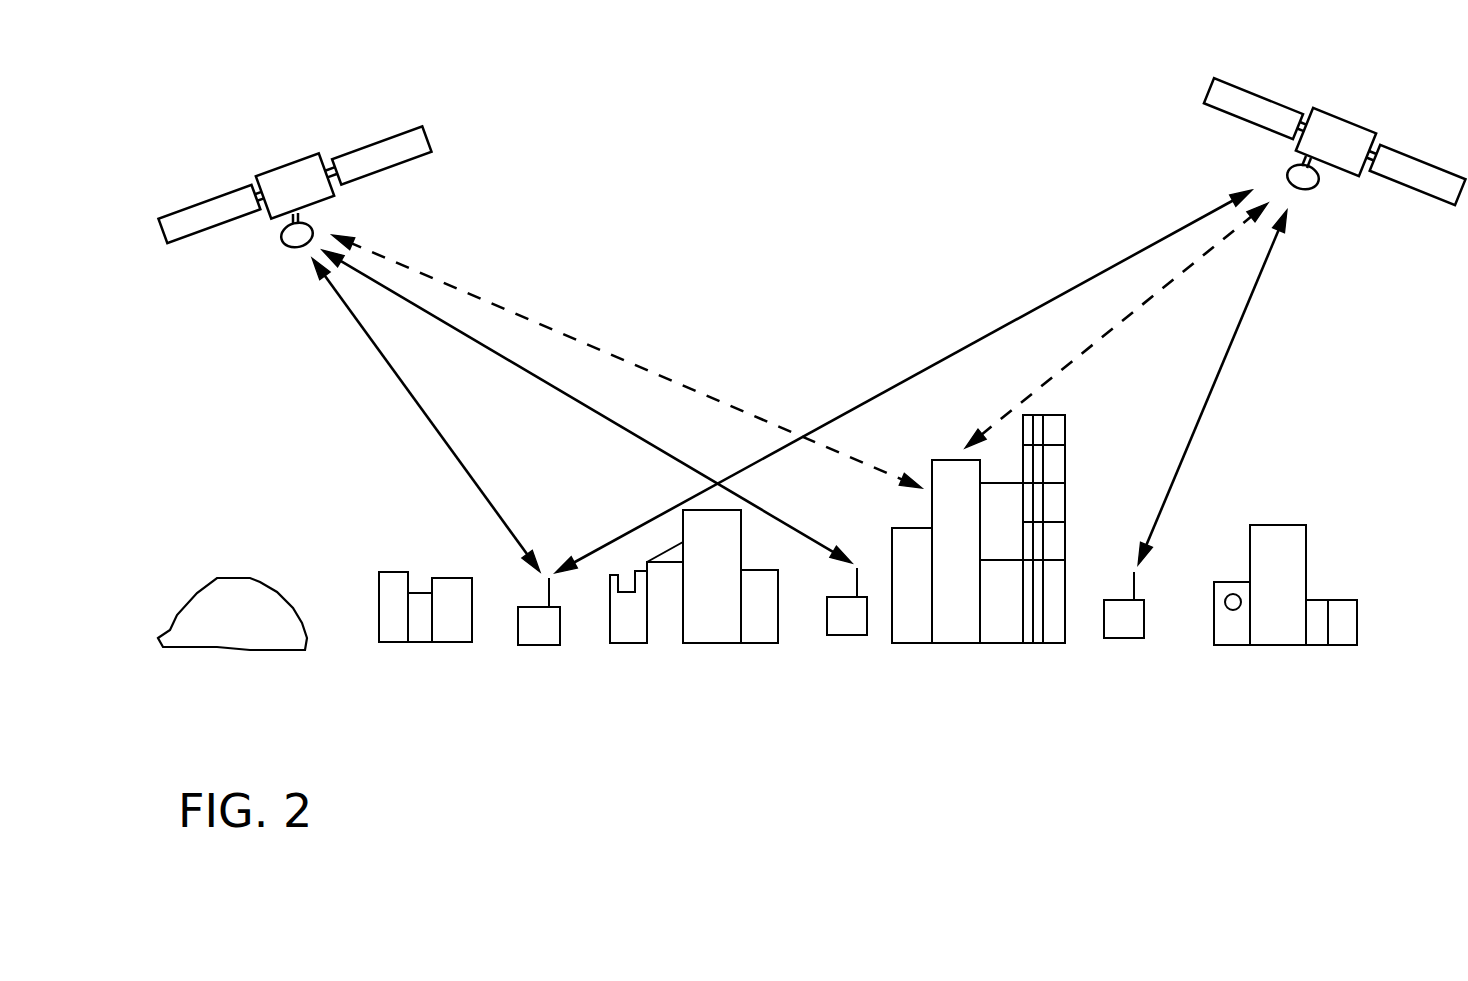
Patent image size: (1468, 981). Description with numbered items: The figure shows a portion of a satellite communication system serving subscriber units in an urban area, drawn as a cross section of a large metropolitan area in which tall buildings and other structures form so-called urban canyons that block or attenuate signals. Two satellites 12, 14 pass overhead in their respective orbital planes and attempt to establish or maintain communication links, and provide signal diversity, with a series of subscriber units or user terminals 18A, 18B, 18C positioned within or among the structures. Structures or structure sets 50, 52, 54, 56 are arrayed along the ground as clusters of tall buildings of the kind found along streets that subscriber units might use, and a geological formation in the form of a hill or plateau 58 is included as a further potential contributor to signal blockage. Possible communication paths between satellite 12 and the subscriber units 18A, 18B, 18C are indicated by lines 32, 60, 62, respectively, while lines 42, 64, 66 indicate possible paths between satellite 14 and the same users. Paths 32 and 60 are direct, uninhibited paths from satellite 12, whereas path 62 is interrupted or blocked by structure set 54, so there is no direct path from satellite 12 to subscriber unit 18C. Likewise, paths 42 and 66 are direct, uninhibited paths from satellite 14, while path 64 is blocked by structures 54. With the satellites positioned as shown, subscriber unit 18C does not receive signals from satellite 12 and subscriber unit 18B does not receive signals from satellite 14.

The satellite 12 is at (255, 180).
The satellite 14 is at (1378, 135).
The subscriber unit 18A is at (537, 645).
The subscriber unit 18B is at (850, 635).
The subscriber unit 18C is at (1123, 638).
The communication path 32 is at (428, 420).
The communication path 42 is at (1040, 303).
The structure set 50 is at (418, 642).
The structure set 52 is at (705, 643).
The structure set 54 is at (963, 643).
The structure set 56 is at (1272, 645).
The hill or plateau 58 is at (243, 650).
The communication path 60 is at (605, 418).
The communication path 62 is at (663, 375).
The communication path 64 is at (1092, 352).
The communication path 66 is at (1222, 367).